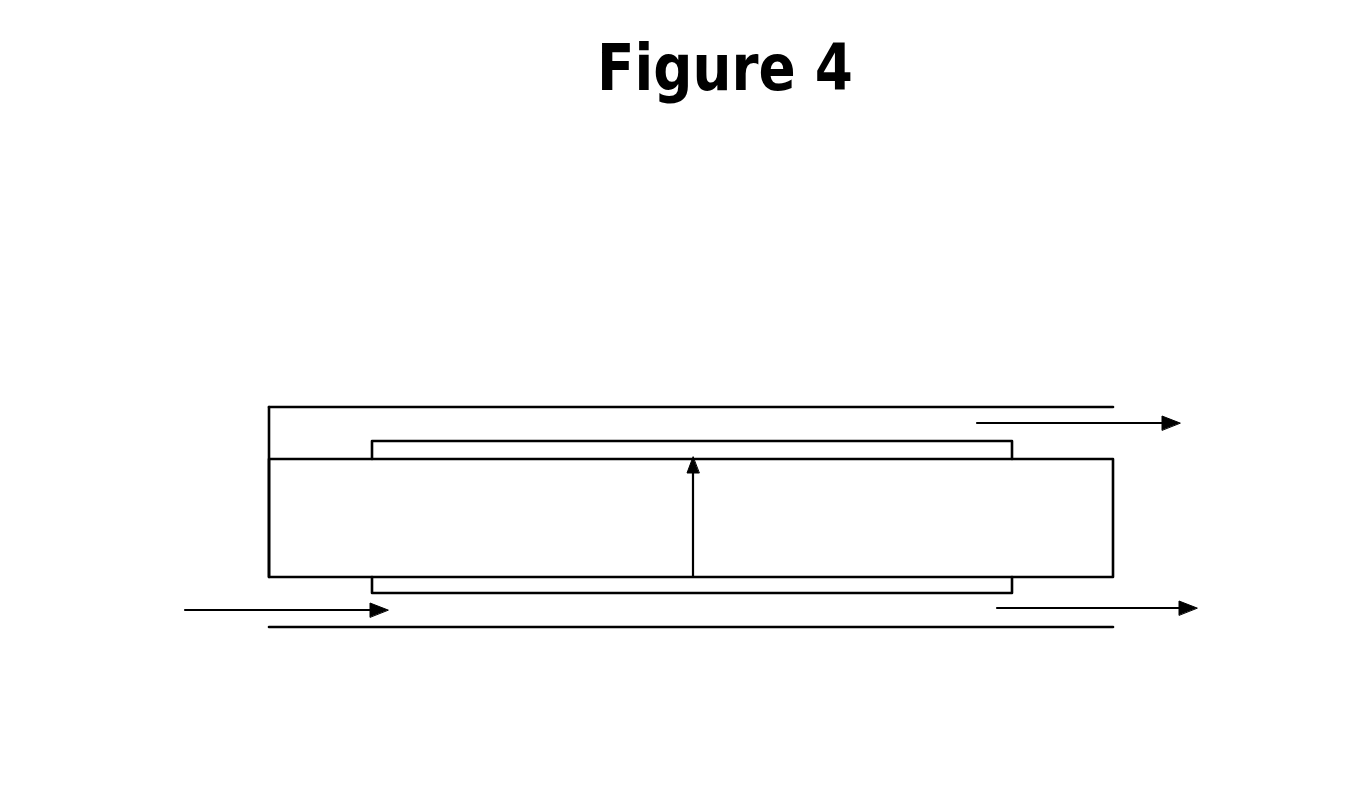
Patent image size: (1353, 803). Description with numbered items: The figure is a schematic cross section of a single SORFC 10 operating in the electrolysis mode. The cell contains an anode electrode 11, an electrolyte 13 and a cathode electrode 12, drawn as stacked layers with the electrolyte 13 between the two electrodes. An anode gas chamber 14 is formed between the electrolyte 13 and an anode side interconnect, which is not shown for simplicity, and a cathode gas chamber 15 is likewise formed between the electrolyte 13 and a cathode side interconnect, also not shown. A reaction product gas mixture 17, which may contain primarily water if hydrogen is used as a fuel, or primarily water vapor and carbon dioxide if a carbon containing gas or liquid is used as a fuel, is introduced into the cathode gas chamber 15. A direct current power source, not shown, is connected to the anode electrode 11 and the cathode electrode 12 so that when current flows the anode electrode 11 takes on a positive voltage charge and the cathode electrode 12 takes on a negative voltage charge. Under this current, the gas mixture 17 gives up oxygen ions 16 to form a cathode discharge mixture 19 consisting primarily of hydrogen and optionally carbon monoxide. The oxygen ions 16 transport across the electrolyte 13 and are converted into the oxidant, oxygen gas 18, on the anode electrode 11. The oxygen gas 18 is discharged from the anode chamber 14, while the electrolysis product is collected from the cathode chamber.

The SORFC 10 is at (691, 420).
The anode electrode 11 is at (505, 441).
The cathode electrode 12 is at (726, 593).
The electrolyte 13 is at (877, 508).
The anode gas chamber 14 is at (690, 423).
The cathode gas chamber 15 is at (877, 608).
The oxygen ions 16 is at (693, 527).
The reaction product gas mixture 17 is at (235, 610).
The oxygen gas 18 is at (1132, 422).
The cathode discharge mixture 19 is at (1150, 608).